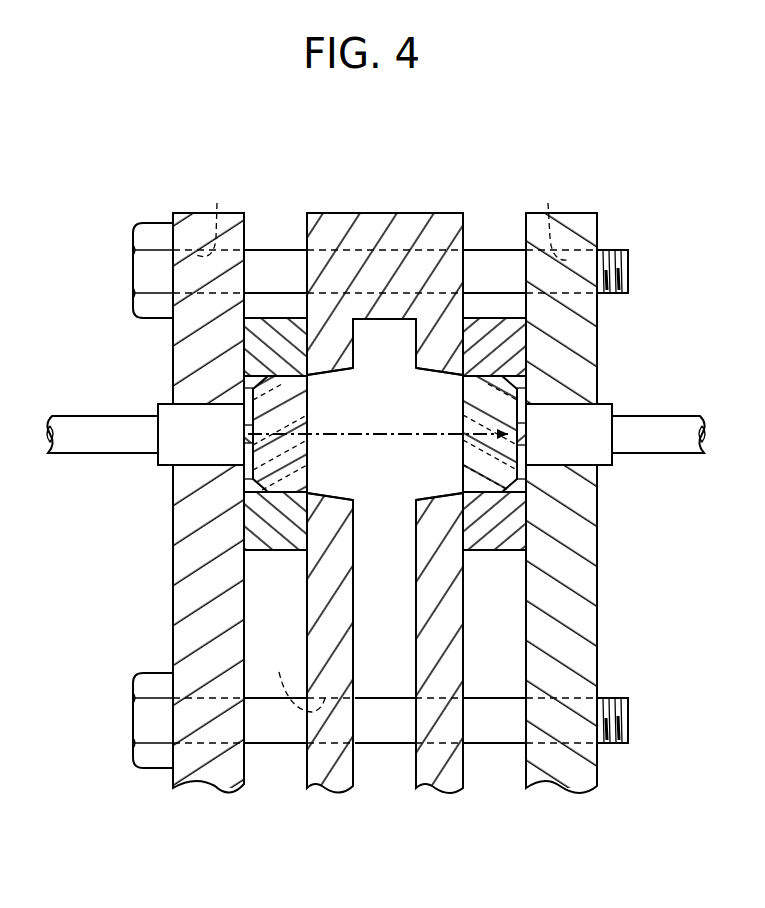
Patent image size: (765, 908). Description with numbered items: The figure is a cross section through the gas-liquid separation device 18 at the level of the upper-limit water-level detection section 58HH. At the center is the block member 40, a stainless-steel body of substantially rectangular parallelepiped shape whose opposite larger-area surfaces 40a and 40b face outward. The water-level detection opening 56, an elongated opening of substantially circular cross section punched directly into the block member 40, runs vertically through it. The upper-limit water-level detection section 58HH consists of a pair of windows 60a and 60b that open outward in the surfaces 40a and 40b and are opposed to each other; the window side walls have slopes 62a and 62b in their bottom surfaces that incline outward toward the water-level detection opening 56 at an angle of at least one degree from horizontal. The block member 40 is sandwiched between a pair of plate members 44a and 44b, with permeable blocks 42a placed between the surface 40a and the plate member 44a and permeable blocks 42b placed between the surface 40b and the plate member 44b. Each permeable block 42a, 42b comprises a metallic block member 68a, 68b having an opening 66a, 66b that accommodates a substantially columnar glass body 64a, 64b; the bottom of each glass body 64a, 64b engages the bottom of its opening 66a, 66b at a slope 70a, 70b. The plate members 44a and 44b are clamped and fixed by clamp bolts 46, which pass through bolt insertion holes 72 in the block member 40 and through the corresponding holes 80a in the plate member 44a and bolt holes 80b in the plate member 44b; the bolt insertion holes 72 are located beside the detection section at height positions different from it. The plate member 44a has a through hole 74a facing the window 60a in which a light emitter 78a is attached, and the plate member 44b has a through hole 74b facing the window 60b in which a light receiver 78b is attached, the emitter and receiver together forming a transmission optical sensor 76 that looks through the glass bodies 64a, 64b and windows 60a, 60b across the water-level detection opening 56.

The gas-liquid separation device 18 is at (468, 112).
The clamp bolt 46 is at (158, 270).
The plate member 44a is at (178, 778).
The plate member 44b is at (590, 777).
The hole 80a is at (215, 216).
The bolt hole 80b is at (553, 217).
The block member 40 is at (388, 519).
The surface 40a is at (305, 760).
The surface 40b is at (467, 760).
The water-level detection opening 56 is at (357, 763).
The upper-limit water-level detection section 58HH is at (381, 330).
The window 60a is at (318, 380).
The window 60b is at (448, 380).
The slope 62a is at (340, 498).
The slope 62b is at (442, 497).
The permeable block 42a is at (273, 316).
The permeable block 42b is at (488, 316).
The opening 66a is at (283, 382).
The opening 66b is at (487, 383).
The glass body 64a is at (298, 443).
The glass body 64b is at (455, 443).
The slope 70a is at (262, 490).
The slope 70b is at (508, 492).
The metallic block member 68a is at (277, 538).
The metallic block member 68b is at (489, 538).
The bolt insertion hole 72 is at (295, 678).
The light emitter 78a is at (203, 420).
The light receiver 78b is at (567, 420).
The through hole 74a is at (215, 447).
The through hole 74b is at (555, 447).
The transmission optical sensor 76 is at (112, 503).